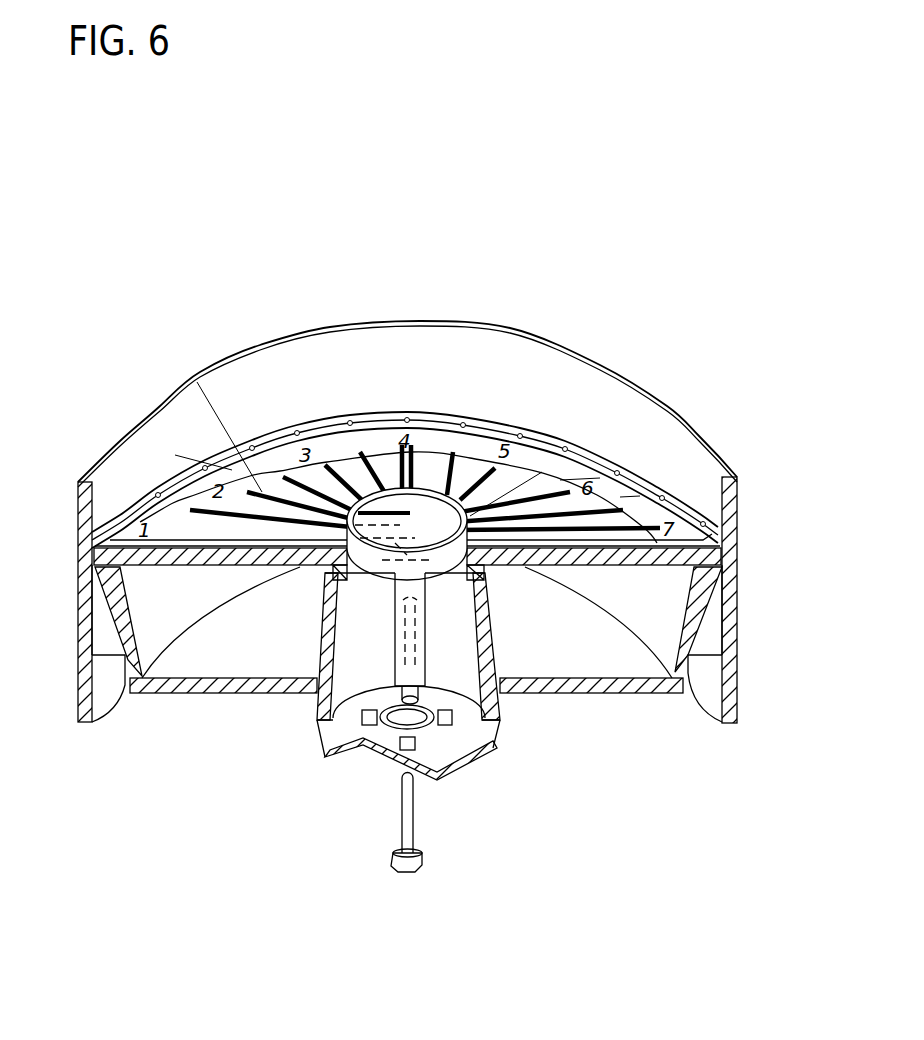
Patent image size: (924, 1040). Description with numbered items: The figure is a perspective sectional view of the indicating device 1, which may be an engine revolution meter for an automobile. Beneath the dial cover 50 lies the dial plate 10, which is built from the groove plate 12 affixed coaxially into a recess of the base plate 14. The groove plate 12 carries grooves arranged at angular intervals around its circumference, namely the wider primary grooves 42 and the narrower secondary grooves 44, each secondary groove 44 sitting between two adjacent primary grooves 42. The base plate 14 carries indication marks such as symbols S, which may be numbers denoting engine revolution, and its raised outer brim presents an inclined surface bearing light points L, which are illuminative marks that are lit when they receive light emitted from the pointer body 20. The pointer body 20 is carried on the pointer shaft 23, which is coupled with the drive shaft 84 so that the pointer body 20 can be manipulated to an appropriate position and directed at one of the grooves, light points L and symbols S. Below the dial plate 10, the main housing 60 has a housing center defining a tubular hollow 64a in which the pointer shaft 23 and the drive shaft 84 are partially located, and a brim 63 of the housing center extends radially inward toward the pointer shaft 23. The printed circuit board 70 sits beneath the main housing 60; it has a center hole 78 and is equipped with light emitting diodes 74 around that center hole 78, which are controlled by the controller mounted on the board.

The indicating device 1 is at (702, 366).
The dial plate 10 is at (662, 514).
The groove plate 12 is at (132, 572).
The base plate 14 is at (128, 610).
The pointer body 20 is at (426, 478).
The pointer shaft 23 is at (425, 583).
The primary groove 42 is at (197, 382).
The secondary groove 44 is at (185, 478).
The dial cover 50 is at (702, 432).
The main housing 60 is at (712, 730).
The brim 63 is at (333, 578).
The tubular hollow 64a is at (345, 672).
The printed circuit board 70 is at (505, 730).
The light emitting diode 74 is at (362, 727).
The center hole 78 is at (417, 732).
The drive shaft 84 is at (415, 823).
The light point L is at (217, 510).
The symbol S is at (137, 523).